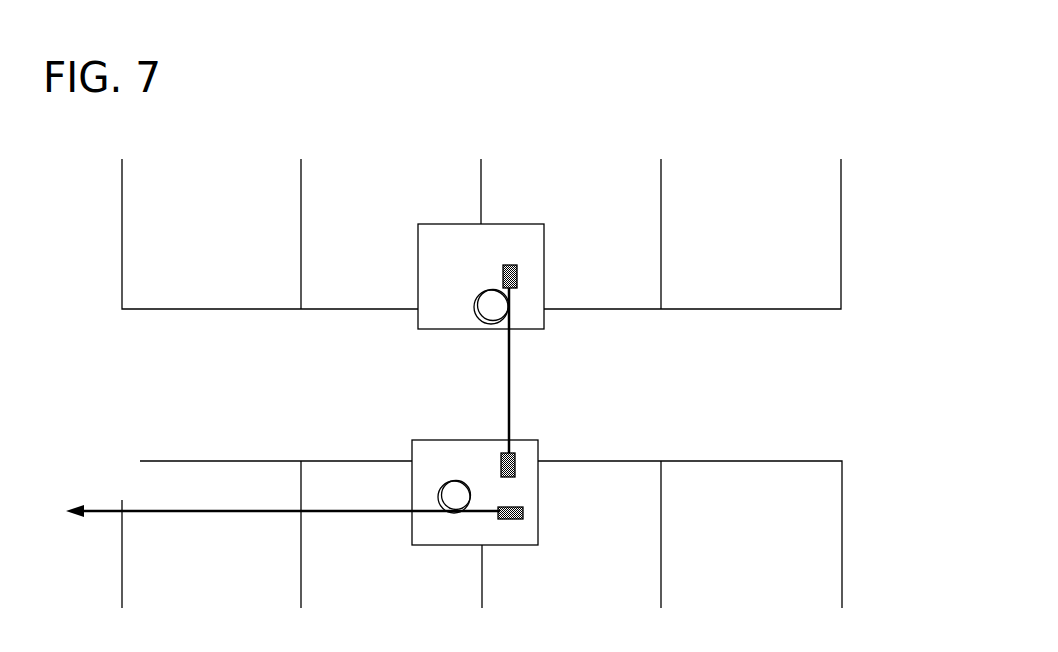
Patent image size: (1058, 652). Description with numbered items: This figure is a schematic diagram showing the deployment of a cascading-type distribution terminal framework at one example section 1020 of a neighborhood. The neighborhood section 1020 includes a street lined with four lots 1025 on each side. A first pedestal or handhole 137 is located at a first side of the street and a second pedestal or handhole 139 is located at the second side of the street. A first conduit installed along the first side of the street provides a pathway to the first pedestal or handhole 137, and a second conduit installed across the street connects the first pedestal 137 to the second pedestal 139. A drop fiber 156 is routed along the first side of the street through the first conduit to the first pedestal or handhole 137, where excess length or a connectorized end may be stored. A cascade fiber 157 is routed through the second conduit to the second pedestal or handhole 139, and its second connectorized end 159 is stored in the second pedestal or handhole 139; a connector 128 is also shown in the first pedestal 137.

The section of a neighborhood 1020 is at (148, 367).
The lot 1025 is at (482, 383).
The second pedestal or handhole 139 is at (481, 276).
The first pedestal or handhole 137 is at (475, 492).
The second connectorized end 159 is at (557, 268).
The cascade fiber 157 is at (558, 370).
The DLX stub cable connector 128 is at (556, 455).
The drop fiber 156 is at (283, 499).